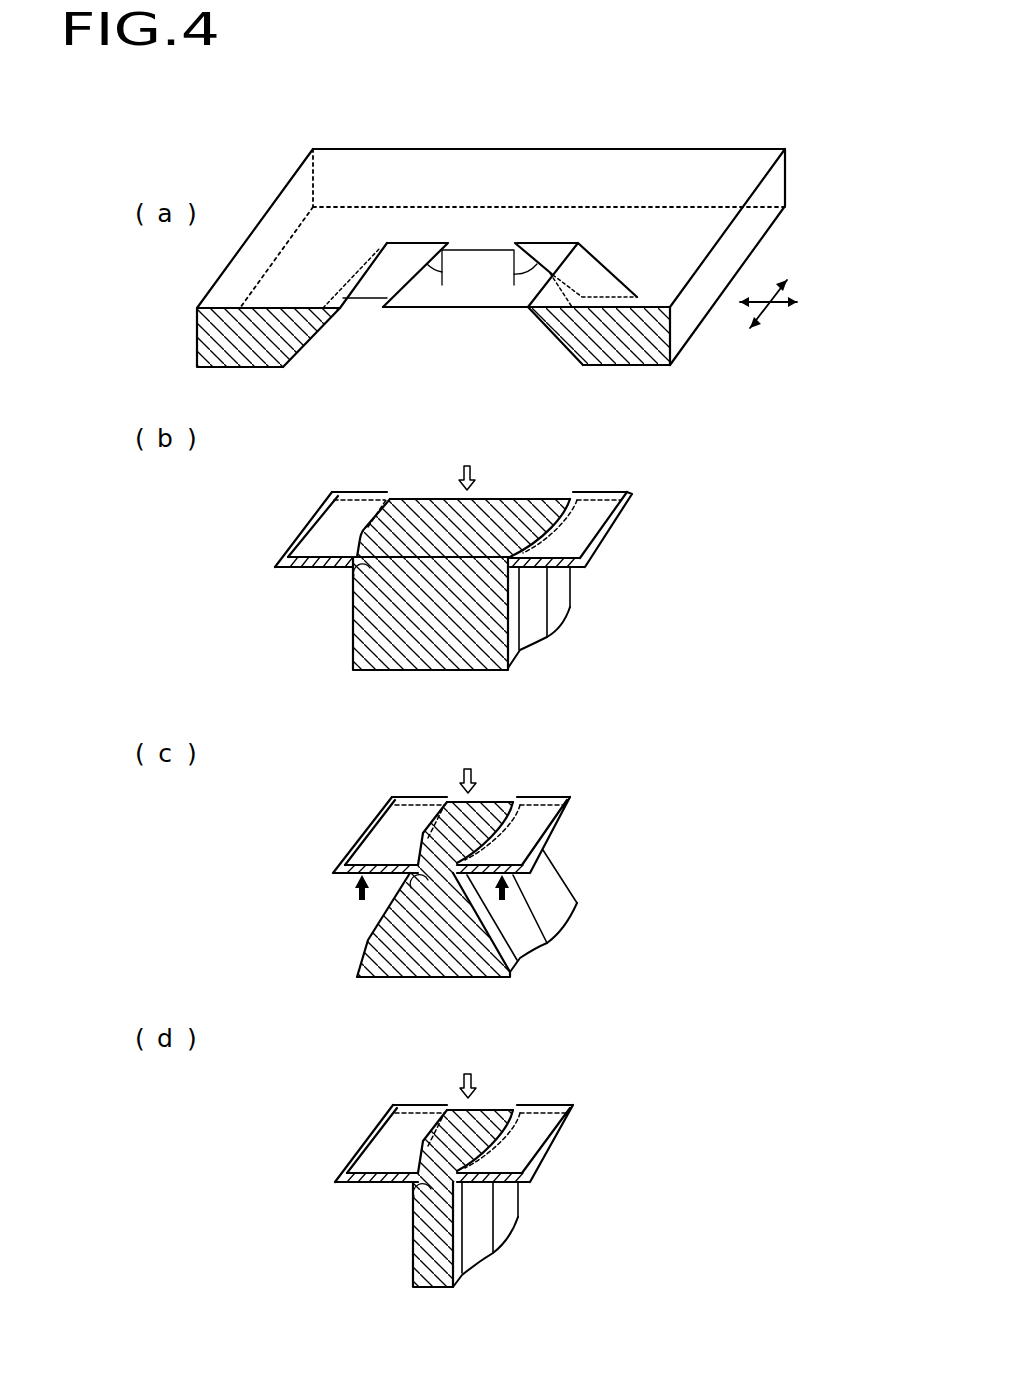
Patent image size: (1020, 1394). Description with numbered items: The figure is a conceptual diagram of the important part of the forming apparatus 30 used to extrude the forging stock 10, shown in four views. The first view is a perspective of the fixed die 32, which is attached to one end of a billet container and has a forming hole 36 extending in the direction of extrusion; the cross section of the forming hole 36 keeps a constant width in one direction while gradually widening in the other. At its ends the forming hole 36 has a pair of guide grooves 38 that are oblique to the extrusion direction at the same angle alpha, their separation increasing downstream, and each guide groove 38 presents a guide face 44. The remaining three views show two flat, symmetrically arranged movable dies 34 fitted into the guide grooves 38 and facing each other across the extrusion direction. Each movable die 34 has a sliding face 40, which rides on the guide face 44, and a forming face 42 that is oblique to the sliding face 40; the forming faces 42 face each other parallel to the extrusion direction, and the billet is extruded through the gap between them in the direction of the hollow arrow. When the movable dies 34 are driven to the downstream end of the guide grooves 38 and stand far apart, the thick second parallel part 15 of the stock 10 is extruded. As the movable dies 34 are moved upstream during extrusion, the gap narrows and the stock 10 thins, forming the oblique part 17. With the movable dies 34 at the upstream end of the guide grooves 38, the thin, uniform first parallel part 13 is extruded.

The forming apparatus 30 is at (776, 83).
The fixed die 32 is at (636, 149).
The movable die 34 is at (553, 1158).
The forming hole 36 is at (470, 332).
The guide groove 38 is at (532, 258).
The sliding face 40 is at (565, 1127).
The forming face 42 is at (513, 1110).
The guide face 44 is at (533, 312).
The stock 10 is at (532, 649).
The second parallel part 15 is at (353, 637).
The oblique part 17 is at (575, 897).
The first parallel part 13 is at (517, 1210).